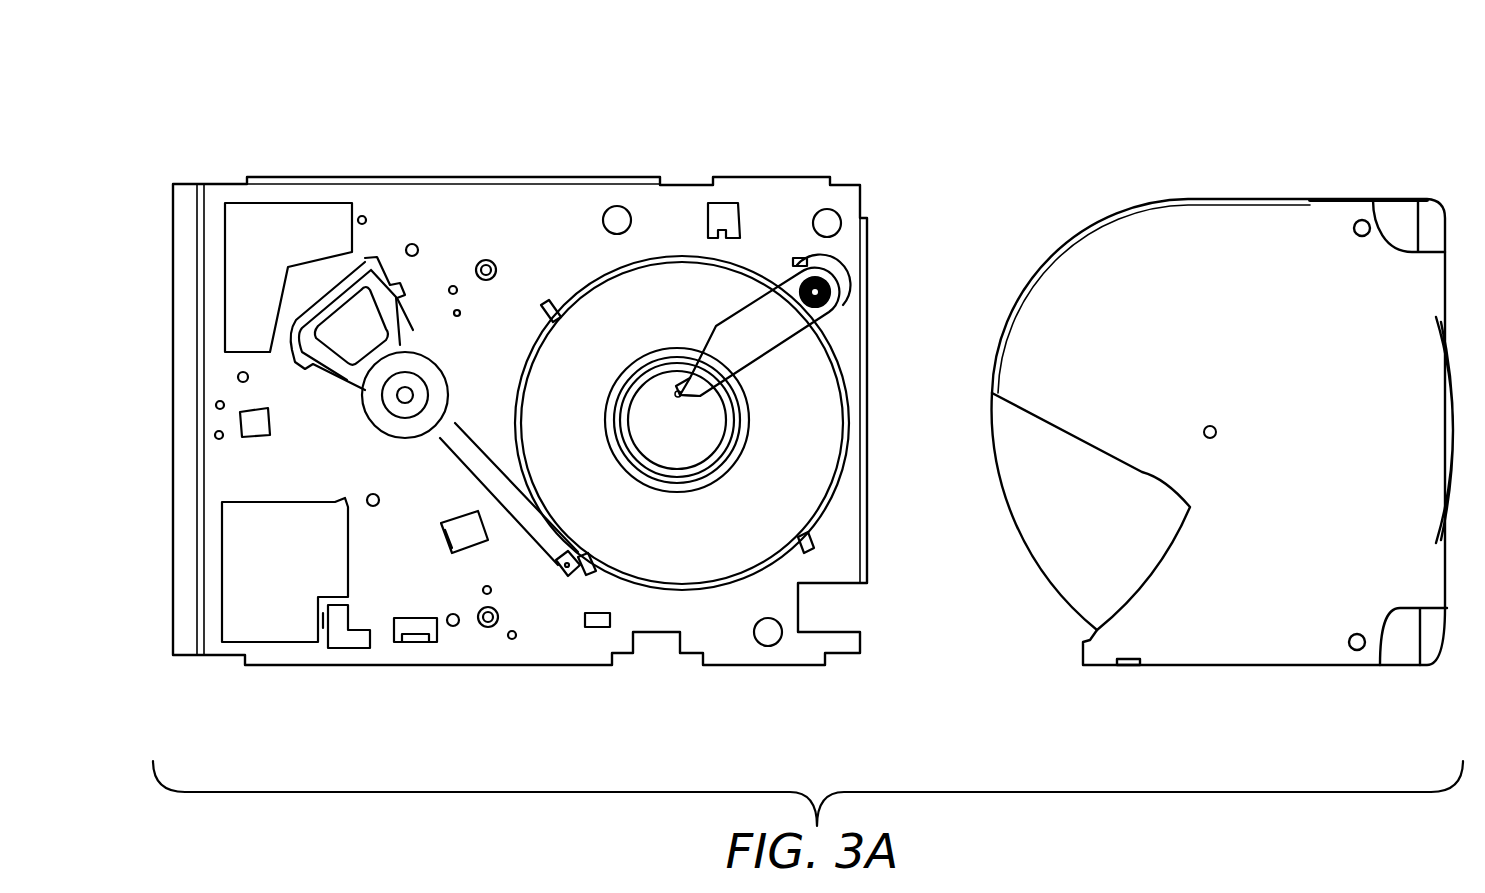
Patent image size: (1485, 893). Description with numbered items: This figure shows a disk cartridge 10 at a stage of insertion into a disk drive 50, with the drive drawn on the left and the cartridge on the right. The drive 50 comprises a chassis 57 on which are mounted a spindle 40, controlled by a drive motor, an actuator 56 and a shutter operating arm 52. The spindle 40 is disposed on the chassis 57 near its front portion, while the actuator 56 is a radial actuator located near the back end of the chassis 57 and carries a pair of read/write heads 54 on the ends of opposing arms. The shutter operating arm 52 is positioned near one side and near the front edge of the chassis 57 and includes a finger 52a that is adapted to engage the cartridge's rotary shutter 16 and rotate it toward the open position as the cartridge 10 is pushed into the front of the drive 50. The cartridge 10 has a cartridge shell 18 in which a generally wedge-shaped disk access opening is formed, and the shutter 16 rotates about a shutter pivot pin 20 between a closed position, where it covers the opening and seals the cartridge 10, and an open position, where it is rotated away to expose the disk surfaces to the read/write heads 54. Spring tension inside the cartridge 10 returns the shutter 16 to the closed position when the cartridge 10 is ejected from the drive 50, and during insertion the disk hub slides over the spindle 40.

The disk cartridge 10 is at (1305, 128).
The rotary shutter 16 is at (1022, 463).
The cartridge shell 18 is at (1139, 246).
The shutter pivot pin 20 is at (1215, 427).
The spindle 40 is at (692, 487).
The disk drive 50 is at (531, 133).
The shutter operating arm 52 is at (728, 303).
The finger 52a is at (673, 397).
The read/write heads 54 is at (520, 451).
The actuator 56 is at (362, 408).
The chassis 57 is at (447, 215).